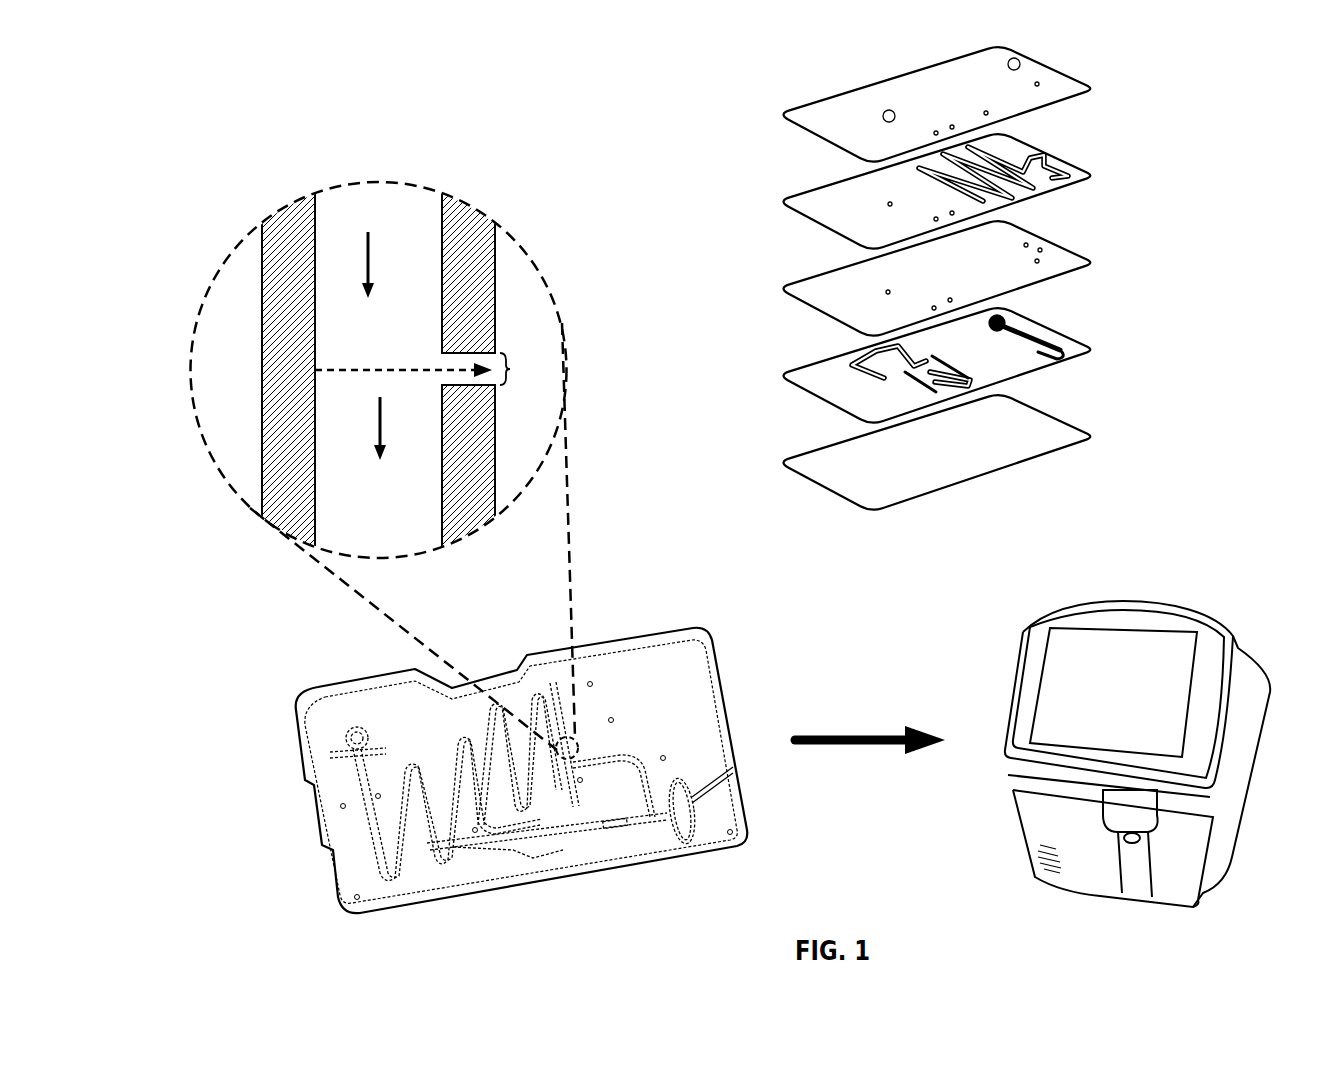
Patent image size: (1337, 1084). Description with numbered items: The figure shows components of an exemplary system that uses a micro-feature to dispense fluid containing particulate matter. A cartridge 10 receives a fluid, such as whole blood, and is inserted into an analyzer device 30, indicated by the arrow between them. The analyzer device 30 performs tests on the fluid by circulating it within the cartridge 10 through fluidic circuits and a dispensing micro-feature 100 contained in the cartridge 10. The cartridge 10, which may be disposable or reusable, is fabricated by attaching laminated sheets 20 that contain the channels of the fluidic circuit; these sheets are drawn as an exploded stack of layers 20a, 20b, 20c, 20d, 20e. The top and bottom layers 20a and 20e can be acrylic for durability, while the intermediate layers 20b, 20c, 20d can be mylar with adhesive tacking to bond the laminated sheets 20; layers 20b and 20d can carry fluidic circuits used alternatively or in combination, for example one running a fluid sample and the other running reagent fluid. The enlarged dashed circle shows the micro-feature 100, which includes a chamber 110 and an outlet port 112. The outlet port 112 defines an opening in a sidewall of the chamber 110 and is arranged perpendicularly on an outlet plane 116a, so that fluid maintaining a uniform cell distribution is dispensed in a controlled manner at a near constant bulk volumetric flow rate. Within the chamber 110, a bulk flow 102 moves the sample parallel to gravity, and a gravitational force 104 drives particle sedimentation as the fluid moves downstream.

The cartridge 10 is at (711, 652).
The laminated sheets 20 is at (1033, 278).
The top layer 20a is at (974, 104).
The intermediate layer 20b is at (974, 191).
The intermediate layer 20c is at (973, 278).
The intermediate layer 20d is at (974, 365).
The bottom layer 20e is at (974, 452).
The analyzer device 30 is at (1255, 662).
The dispensing micro-feature 100 is at (578, 762).
The bulk flow 102 is at (364, 242).
The gravitational force 104 is at (381, 404).
The chamber 110 is at (315, 258).
The outlet port 112 is at (531, 369).
The outlet plane 116a is at (375, 346).